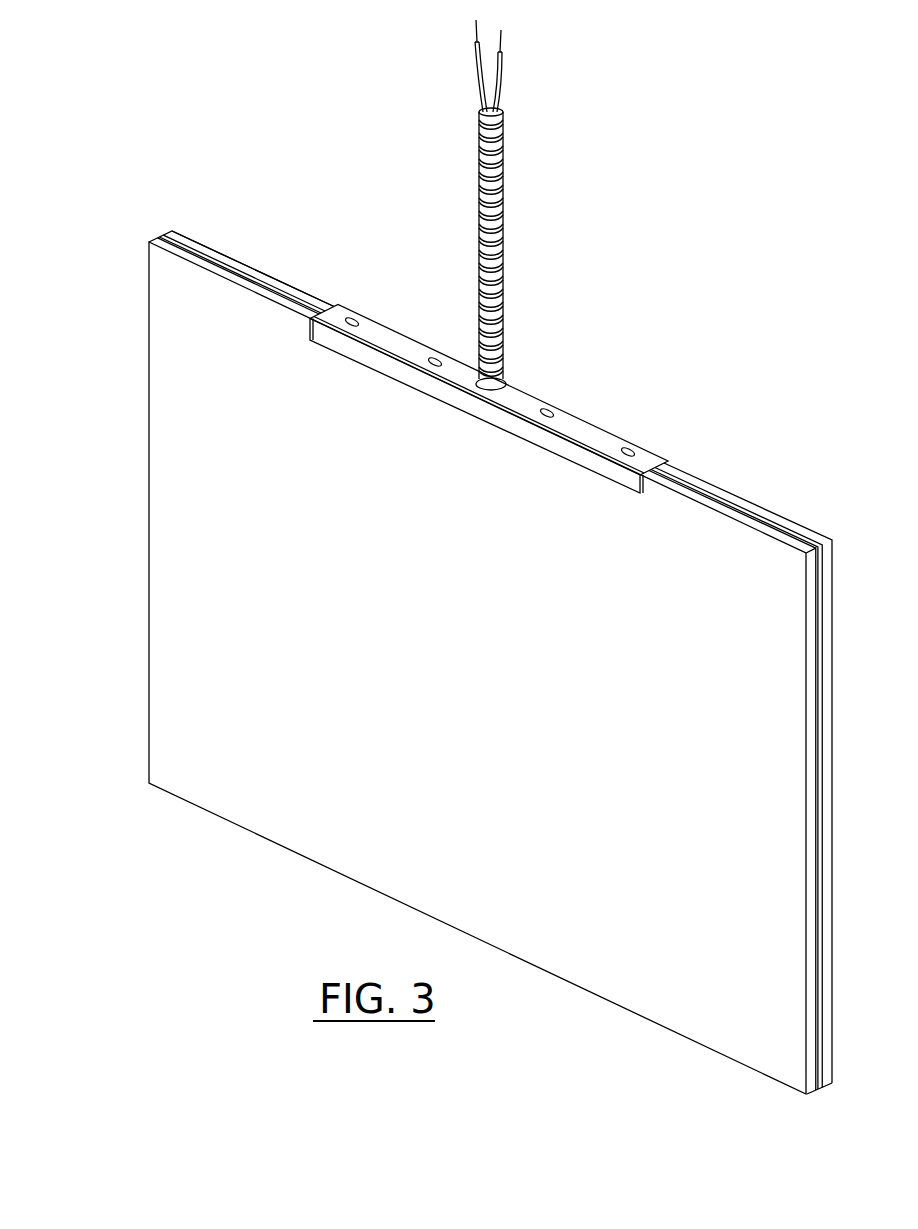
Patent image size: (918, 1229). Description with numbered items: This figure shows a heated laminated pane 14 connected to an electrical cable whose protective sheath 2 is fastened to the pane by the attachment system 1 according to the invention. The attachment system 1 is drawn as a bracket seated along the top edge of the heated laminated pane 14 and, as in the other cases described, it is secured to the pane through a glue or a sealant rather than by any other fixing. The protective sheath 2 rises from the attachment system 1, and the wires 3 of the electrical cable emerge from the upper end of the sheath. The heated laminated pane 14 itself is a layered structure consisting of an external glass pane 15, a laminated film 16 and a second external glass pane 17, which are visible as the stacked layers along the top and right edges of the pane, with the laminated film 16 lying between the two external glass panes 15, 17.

The attachment system 1 is at (595, 420).
The protective sheath 2 is at (478, 200).
The electrical wires 3 is at (508, 74).
The heated laminated pane 14 is at (148, 407).
The external glass pane 15 is at (695, 477).
The laminated film 16 is at (762, 512).
The external glass pane 17 is at (805, 545).